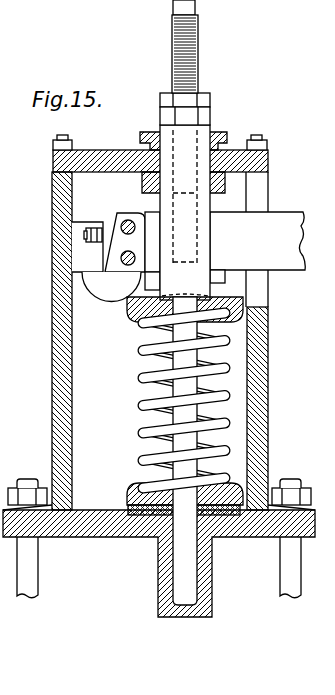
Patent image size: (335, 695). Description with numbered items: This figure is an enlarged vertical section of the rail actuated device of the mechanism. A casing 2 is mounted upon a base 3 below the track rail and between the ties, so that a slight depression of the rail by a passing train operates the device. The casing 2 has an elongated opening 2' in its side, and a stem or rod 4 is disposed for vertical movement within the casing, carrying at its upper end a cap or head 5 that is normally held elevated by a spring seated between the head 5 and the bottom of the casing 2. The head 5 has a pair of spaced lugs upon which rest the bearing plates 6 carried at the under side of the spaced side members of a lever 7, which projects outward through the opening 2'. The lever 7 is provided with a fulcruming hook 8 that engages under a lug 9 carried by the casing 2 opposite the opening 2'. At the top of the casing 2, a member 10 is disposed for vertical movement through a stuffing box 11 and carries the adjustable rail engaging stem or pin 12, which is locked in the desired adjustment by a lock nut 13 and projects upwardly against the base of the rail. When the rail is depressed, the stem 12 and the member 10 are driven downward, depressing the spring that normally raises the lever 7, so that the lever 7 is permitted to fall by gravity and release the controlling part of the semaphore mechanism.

The casing 2 is at (159, 394).
The elongated opening 2' is at (270, 341).
The base 3 is at (217, 459).
The stem or rod 4 is at (187, 446).
The cap or head 5 is at (237, 305).
The bearing plates 6 is at (217, 273).
The lever 7 is at (272, 221).
The fulcruming hook 8 is at (100, 288).
The lug 9 is at (88, 260).
The member 10 is at (204, 263).
The stuffing box 11 is at (231, 134).
The rail engaging stem or pin 12 is at (199, 80).
The lock nut 13 is at (210, 101).